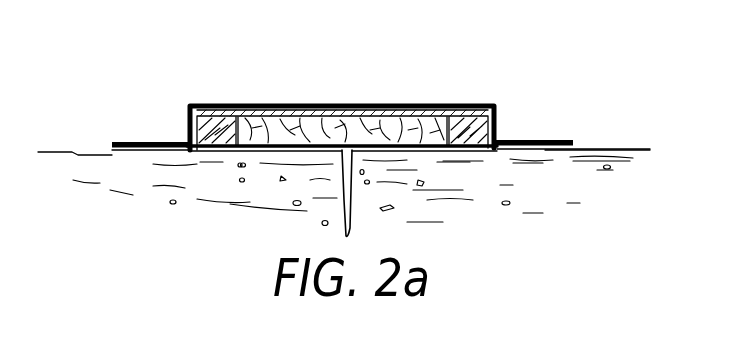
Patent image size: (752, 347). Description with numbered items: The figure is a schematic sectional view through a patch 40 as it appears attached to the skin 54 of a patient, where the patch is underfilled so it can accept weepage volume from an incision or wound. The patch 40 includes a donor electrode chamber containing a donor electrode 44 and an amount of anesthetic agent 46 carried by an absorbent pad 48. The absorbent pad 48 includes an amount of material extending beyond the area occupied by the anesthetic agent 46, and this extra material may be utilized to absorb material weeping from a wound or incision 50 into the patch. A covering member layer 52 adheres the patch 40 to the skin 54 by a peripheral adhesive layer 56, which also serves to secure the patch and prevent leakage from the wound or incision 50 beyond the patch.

The patch 40 is at (152, 43).
The donor electrode 44 is at (315, 110).
The anesthetic agent 46 is at (258, 120).
The absorbent pad 48 is at (198, 103).
The wound or incision 50 is at (352, 229).
The covering member layer 52 is at (400, 103).
The skin 54 is at (612, 155).
The peripheral adhesive layer 56 is at (145, 153).